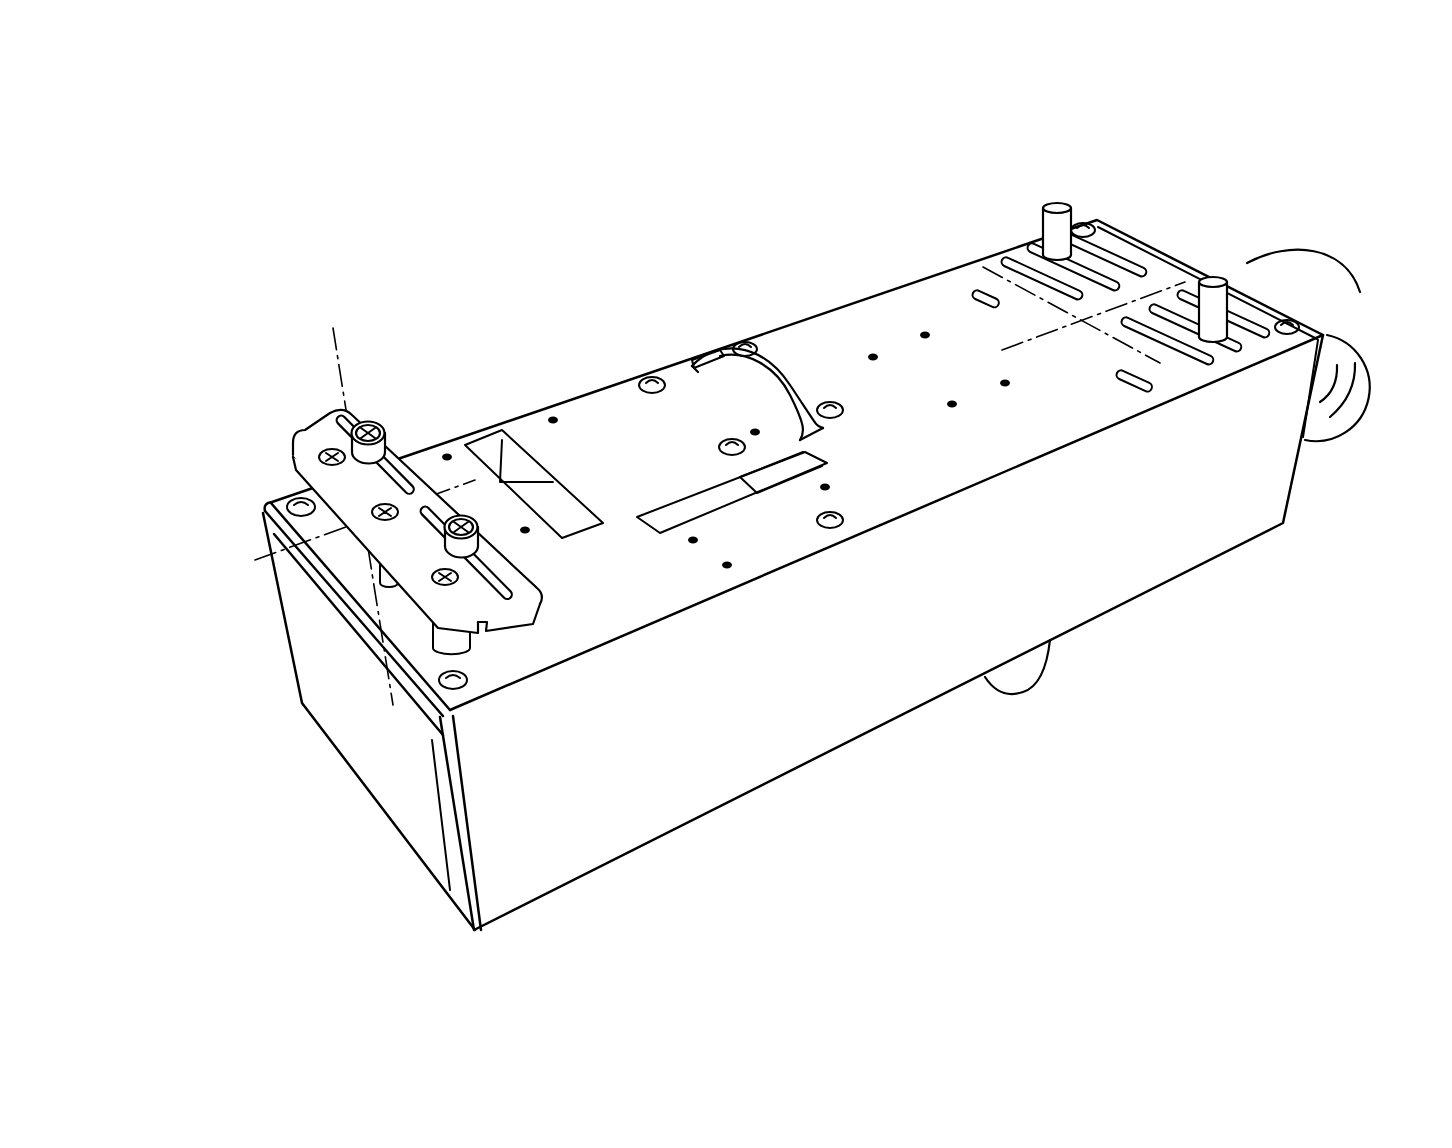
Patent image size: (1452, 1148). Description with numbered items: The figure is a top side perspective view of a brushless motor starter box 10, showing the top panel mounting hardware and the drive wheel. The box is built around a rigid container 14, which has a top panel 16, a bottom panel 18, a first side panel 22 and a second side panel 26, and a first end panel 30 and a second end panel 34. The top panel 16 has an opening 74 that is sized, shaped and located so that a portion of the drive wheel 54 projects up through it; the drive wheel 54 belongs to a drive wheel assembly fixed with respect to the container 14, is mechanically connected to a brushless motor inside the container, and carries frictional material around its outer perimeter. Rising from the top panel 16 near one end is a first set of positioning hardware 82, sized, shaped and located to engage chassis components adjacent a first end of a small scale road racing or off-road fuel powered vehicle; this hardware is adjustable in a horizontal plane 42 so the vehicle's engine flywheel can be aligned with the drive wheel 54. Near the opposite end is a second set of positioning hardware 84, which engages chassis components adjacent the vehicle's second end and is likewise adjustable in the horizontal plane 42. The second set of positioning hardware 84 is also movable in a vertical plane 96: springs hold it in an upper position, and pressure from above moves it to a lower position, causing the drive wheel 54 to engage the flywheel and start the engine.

The brushless motor starter box 10 is at (1205, 197).
The rigid container 14 is at (1250, 477).
The top panel 16 is at (860, 313).
The bottom panel 18 is at (1050, 640).
The first side panel 22 is at (633, 775).
The second side panel 26 is at (573, 395).
The first end panel 30 is at (340, 715).
The second end panel 34 is at (1190, 262).
The horizontal plane 42 is at (1115, 300).
The drive wheel 54 is at (773, 373).
The opening 74 is at (702, 353).
The first set of positioning hardware 82 is at (1052, 205).
The second set of positioning hardware 84 is at (383, 440).
The vertical plane 96 is at (338, 378).